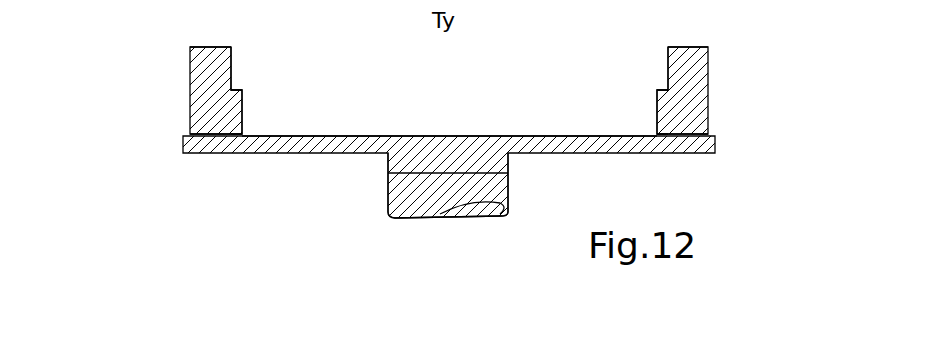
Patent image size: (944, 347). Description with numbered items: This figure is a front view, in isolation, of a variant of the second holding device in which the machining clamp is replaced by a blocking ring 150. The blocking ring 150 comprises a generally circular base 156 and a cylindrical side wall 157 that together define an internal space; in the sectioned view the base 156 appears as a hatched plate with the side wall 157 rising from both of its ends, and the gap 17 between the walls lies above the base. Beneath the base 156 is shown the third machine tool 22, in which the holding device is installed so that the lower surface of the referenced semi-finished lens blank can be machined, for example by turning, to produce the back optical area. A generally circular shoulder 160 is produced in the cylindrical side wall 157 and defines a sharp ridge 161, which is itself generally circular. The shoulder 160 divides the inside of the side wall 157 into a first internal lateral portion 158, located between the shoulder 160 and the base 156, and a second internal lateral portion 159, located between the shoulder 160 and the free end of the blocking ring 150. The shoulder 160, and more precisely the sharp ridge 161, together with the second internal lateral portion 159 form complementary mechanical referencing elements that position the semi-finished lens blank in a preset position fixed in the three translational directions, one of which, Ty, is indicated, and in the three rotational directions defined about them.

The blocking ring 150 is at (130, 168).
The base 156 is at (310, 150).
The third machine tool 22 is at (485, 208).
The gap between side walls 17 is at (449, 69).
The cylindrical side wall 157 is at (205, 100).
The first internal lateral portion 158 is at (243, 112).
The second internal lateral portion 159 is at (232, 57).
The sharp ridge 161 is at (243, 90).
The shoulder 160 is at (220, 100).